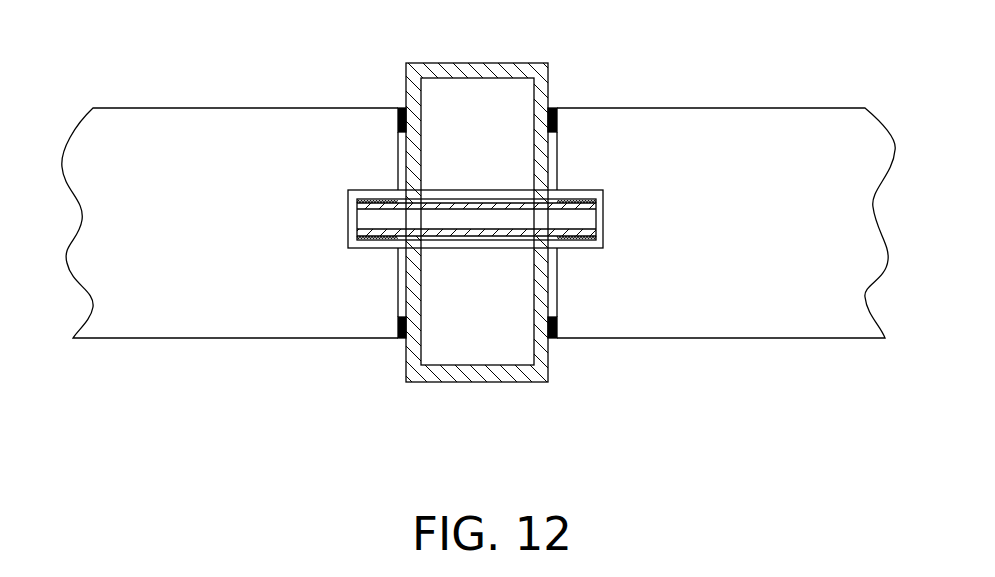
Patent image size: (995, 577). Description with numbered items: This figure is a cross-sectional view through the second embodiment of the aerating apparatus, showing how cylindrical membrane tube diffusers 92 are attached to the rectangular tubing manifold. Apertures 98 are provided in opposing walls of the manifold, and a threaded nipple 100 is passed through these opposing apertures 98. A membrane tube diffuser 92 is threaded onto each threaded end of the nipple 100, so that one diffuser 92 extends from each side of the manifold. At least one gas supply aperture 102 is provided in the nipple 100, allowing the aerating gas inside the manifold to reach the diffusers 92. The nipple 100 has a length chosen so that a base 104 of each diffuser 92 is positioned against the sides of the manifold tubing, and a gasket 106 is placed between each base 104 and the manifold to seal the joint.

The membrane tube diffuser 92 is at (233, 229).
The aperture in manifold wall 98 is at (532, 200).
The threaded nipple 100 is at (588, 219).
The gas supply aperture 102 is at (477, 232).
The base 104 is at (397, 135).
The gasket 106 is at (400, 107).